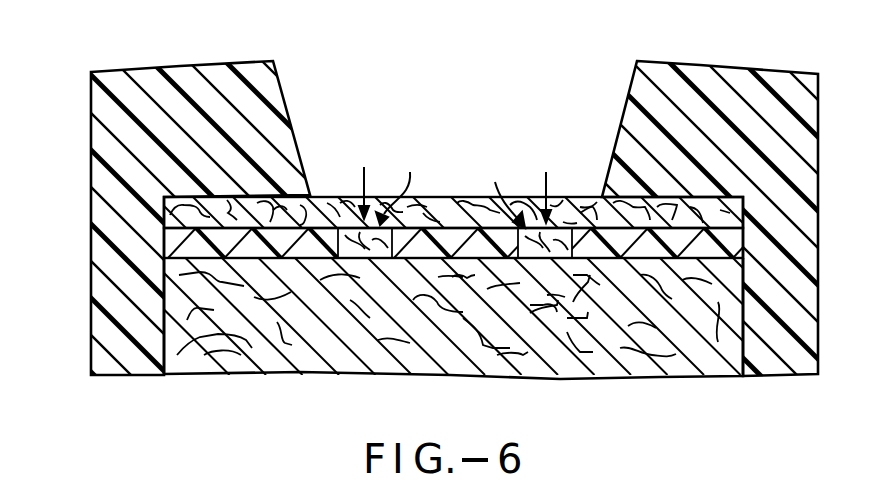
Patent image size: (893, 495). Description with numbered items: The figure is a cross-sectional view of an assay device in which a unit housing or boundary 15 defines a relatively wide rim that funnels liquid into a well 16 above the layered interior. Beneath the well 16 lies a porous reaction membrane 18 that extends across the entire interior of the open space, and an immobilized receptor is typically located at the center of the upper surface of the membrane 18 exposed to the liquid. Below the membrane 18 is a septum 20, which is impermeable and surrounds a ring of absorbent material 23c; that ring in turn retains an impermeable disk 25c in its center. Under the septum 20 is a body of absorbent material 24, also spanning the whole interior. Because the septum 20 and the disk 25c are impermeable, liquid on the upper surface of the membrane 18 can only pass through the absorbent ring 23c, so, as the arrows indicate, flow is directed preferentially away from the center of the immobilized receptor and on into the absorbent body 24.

The device housing 15 is at (98, 133).
The well 16 is at (501, 82).
The porous reaction membrane 18 is at (335, 203).
The septum 20 is at (275, 218).
The ring of absorbent material 23c is at (557, 259).
The body of absorbent material 24 is at (670, 372).
The impermeable disk 25c is at (467, 212).